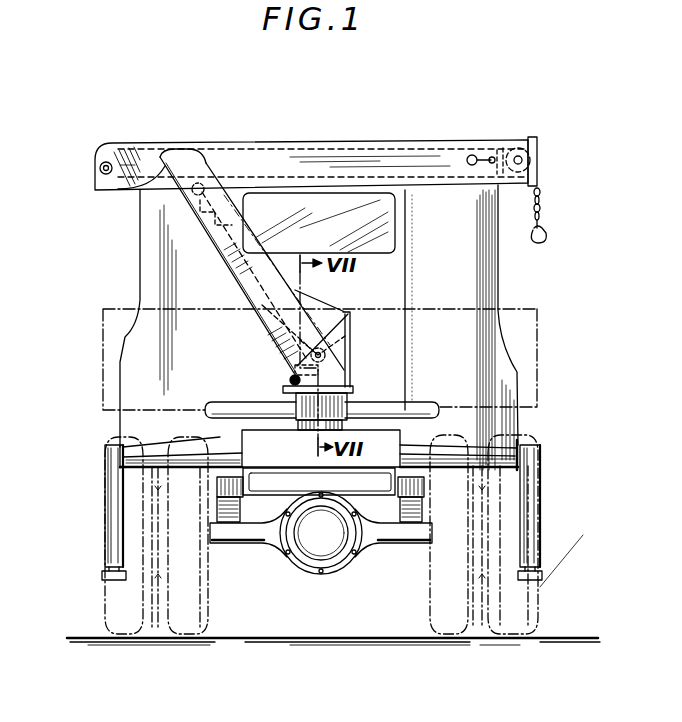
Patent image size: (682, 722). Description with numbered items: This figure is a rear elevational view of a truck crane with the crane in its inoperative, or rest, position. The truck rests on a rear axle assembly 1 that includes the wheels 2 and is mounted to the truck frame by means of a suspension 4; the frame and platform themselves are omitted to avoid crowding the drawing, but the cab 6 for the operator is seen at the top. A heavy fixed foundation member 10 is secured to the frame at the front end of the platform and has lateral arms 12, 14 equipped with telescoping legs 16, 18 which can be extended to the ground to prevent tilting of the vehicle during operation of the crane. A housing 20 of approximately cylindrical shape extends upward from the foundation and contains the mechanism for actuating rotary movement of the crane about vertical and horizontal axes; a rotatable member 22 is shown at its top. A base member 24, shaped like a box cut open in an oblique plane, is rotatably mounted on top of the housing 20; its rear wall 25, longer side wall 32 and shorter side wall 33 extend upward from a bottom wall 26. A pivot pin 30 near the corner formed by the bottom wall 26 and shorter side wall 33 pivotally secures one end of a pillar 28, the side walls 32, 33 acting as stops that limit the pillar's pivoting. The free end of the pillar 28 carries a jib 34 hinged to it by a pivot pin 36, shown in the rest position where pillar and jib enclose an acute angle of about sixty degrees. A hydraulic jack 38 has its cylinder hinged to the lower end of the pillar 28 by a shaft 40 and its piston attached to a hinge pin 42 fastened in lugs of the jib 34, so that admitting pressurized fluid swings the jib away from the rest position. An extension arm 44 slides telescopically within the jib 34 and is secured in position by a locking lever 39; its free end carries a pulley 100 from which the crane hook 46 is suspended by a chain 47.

The rear axle assembly 1 is at (263, 560).
The wheels 2 is at (118, 612).
The suspension 4 is at (410, 522).
The cab 6 is at (485, 296).
The foundation member 10 is at (405, 447).
The lateral arm 12 is at (157, 446).
The lateral arm 14 is at (503, 450).
The telescoping leg 16 is at (107, 512).
The telescoping leg 18 is at (540, 510).
The housing 20 is at (346, 404).
The turntable bar 22 is at (421, 403).
The base member 24 is at (357, 325).
The rear wall 25 is at (350, 312).
The bottom wall 26 is at (352, 384).
The pillar 28 is at (222, 255).
The pivot pin 30 is at (290, 381).
The longer side wall 32 is at (352, 348).
The shorter side wall 33 is at (285, 372).
The jib 34 is at (380, 142).
The pivot pin 36 is at (97, 170).
The hydraulic jack 38 is at (266, 242).
The locking lever 39 is at (478, 157).
The shaft 40 is at (322, 348).
The hinge pin 42 is at (201, 180).
The extension arm 44 is at (442, 165).
The crane hook 46 is at (547, 229).
The chain 47 is at (541, 184).
The pulley 100 is at (538, 158).